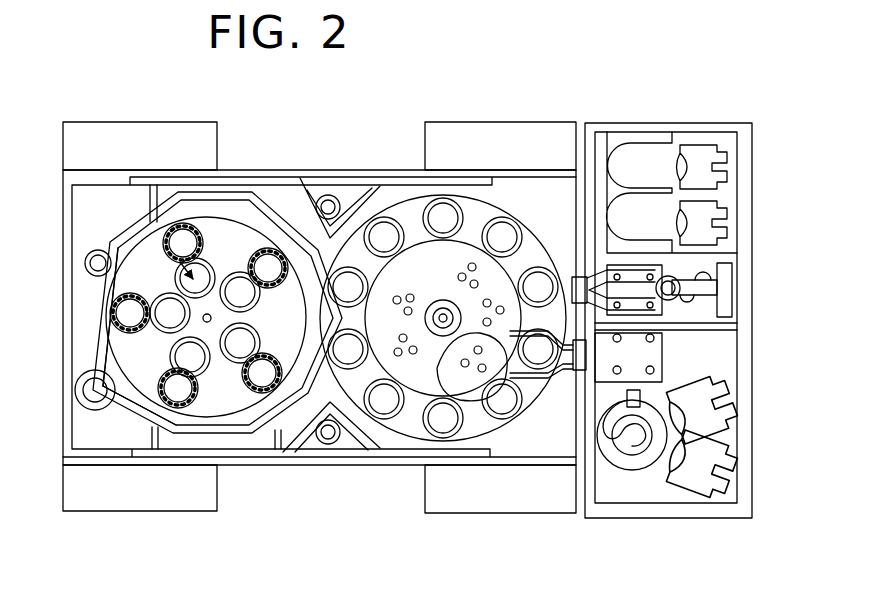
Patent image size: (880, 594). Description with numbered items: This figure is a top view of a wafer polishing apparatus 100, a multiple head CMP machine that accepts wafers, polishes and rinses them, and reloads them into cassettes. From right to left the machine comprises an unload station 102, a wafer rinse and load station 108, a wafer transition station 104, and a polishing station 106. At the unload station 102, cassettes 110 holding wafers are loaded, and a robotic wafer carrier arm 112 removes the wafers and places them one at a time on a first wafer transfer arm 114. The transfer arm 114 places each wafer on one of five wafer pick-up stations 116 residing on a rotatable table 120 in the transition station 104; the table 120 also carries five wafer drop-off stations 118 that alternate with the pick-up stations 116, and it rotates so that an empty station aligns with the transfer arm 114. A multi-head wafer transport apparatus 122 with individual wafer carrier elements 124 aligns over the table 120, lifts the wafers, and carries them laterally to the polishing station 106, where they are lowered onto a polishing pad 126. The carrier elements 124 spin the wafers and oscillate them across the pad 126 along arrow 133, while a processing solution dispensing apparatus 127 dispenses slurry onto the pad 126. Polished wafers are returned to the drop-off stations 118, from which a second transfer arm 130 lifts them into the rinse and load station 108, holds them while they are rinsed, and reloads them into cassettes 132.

The wafer polishing apparatus 100 is at (456, 92).
The unload station 102 is at (678, 491).
The wafer transition station 104 is at (501, 446).
The polishing station 106 is at (244, 166).
The wafer rinse and load station 108 is at (706, 112).
The cassettes 110 is at (718, 416).
The robotic wafer carrier arm 112 is at (633, 452).
The first wafer transfer arm 114 is at (567, 380).
The wafer pick-up stations 116 is at (384, 234).
The wafer drop-off stations 118 is at (538, 289).
The rotatable table 120 is at (412, 420).
The multi-head wafer transport apparatus 122 is at (250, 437).
The wafer carrier elements 124 is at (130, 305).
The polishing pad 126 is at (128, 288).
The processing solution dispensing apparatus 127 is at (194, 356).
The second transfer arm 130 is at (602, 268).
The cassettes 132 is at (710, 153).
The arrow 133 is at (236, 291).